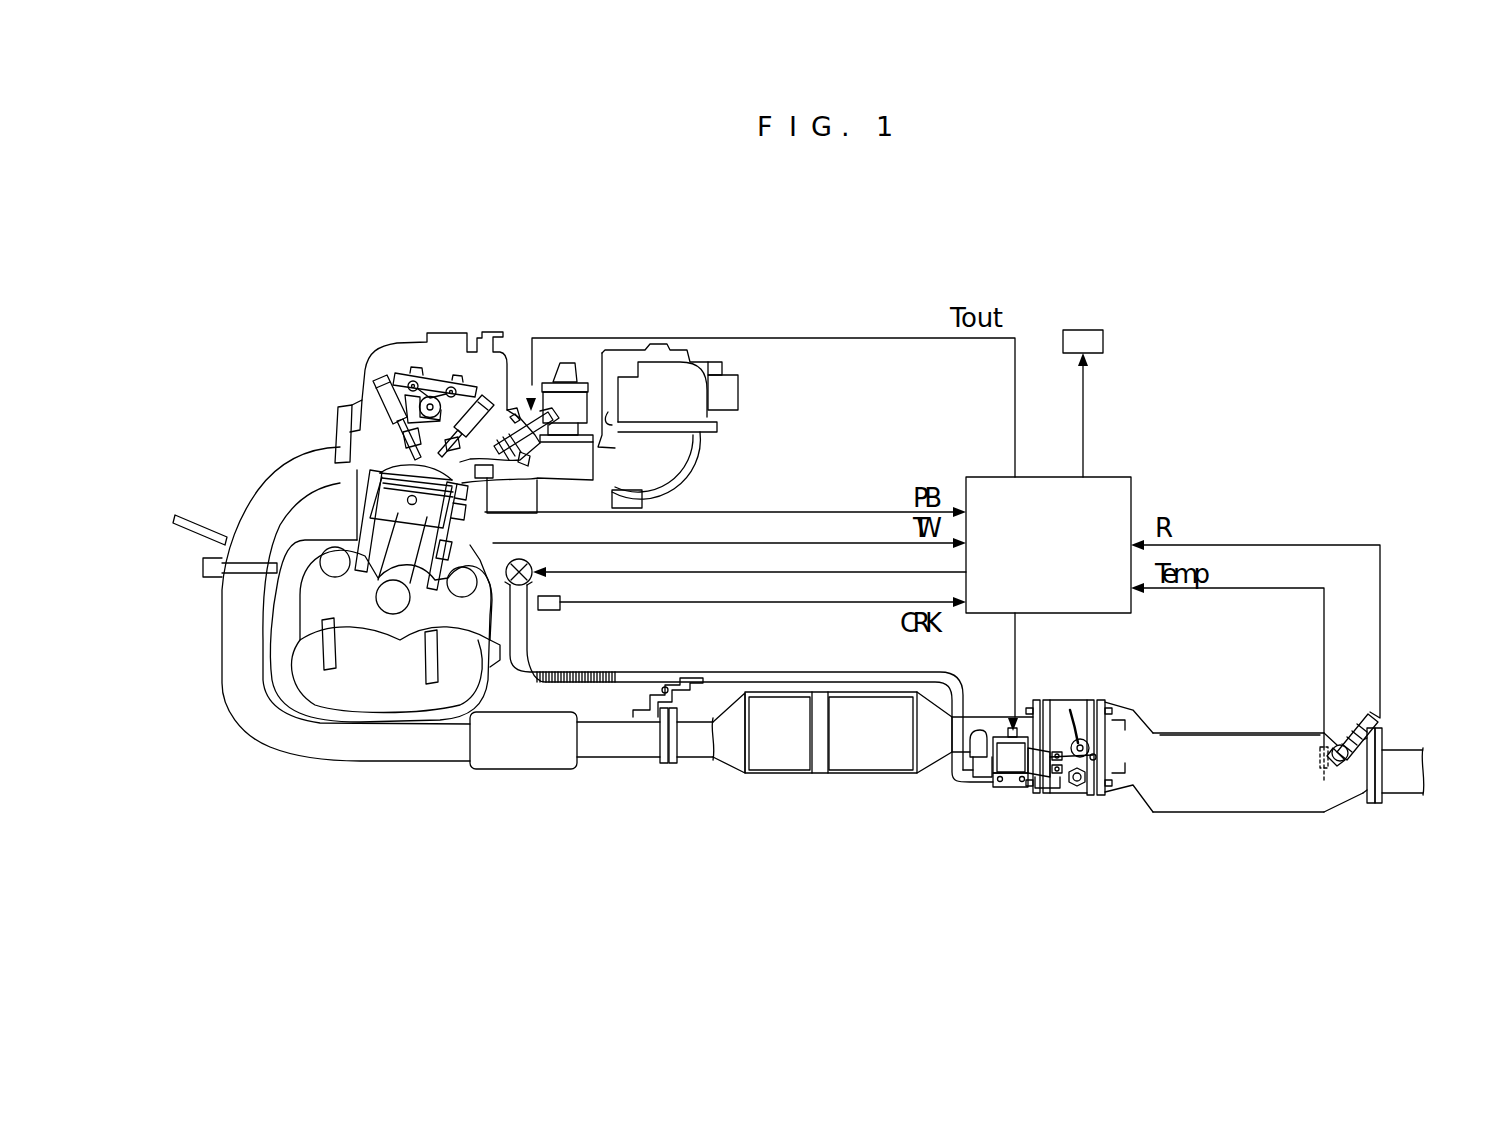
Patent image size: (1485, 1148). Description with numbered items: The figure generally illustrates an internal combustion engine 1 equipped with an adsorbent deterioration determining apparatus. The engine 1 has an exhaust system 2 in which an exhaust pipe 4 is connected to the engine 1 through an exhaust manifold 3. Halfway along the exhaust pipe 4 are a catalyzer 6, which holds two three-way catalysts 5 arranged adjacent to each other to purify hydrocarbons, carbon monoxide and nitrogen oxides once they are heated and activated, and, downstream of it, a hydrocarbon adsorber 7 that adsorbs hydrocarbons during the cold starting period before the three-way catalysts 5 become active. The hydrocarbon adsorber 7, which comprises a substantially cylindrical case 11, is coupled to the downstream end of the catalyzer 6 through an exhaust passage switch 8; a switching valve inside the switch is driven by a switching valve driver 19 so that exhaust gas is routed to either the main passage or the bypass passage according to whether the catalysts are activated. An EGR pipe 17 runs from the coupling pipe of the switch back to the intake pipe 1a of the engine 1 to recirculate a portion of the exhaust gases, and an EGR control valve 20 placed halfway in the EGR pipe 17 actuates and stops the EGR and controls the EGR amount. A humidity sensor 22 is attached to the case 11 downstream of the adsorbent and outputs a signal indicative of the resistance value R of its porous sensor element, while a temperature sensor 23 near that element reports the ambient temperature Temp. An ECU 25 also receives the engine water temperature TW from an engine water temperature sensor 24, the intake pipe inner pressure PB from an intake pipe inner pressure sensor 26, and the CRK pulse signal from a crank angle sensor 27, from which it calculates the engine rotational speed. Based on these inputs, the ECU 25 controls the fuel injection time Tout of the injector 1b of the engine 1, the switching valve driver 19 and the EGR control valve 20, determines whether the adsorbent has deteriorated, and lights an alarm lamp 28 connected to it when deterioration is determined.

The internal combustion engine 1 is at (408, 319).
The intake pipe 1a is at (592, 472).
The injector 1b is at (529, 398).
The exhaust system 2 is at (391, 824).
The exhaust manifold 3 is at (336, 416).
The exhaust pipe 4 is at (293, 753).
The three-way catalysts 5 is at (852, 748).
The catalyzer 6 is at (788, 803).
The hydrocarbon adsorber 7 is at (1216, 703).
The exhaust passage switch 8 is at (1074, 694).
The case 11 is at (1262, 734).
The EGR pipe 17 is at (967, 785).
The switching valve driver 19 is at (1015, 792).
The EGR control valve 20 is at (540, 578).
The humidity sensor 22 is at (1363, 780).
The temperature sensor 23 is at (1322, 790).
The engine water temperature sensor 24 is at (455, 505).
The ECU 25 is at (1118, 477).
The intake pipe inner pressure sensor 26 is at (497, 472).
The crank angle sensor 27 is at (548, 613).
The alarm lamp 28 is at (1083, 330).